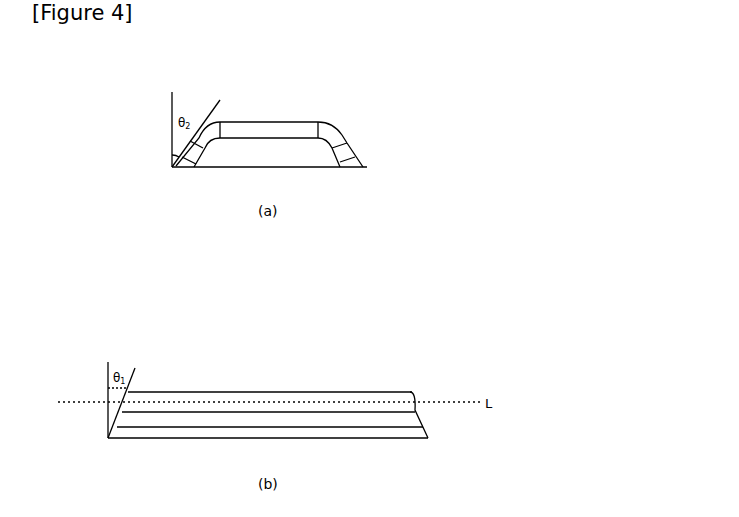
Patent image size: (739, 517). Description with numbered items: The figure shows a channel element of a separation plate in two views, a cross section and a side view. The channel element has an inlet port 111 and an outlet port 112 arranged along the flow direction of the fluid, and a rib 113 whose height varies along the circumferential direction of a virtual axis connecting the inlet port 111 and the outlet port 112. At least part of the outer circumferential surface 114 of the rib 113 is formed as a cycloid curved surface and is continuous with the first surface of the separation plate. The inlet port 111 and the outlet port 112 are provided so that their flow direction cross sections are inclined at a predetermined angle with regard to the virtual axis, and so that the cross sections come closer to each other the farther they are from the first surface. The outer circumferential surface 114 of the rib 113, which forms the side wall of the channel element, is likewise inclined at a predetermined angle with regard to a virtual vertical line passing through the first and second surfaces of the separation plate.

The inlet port 111 is at (229, 158).
The outlet port 112 is at (425, 388).
The rib 113 is at (240, 122).
The outer circumferential surface 114 is at (347, 143).